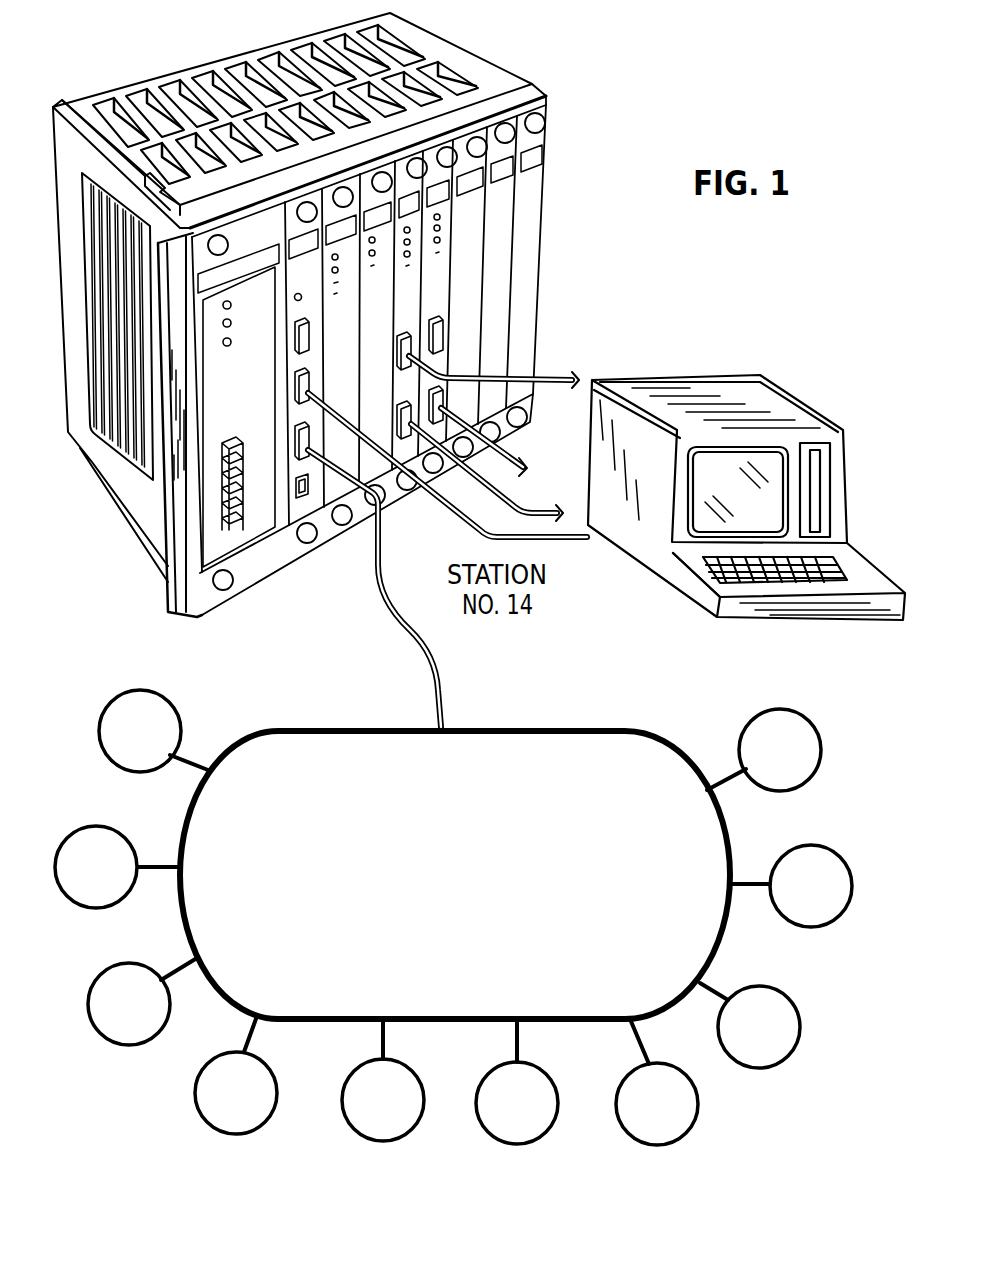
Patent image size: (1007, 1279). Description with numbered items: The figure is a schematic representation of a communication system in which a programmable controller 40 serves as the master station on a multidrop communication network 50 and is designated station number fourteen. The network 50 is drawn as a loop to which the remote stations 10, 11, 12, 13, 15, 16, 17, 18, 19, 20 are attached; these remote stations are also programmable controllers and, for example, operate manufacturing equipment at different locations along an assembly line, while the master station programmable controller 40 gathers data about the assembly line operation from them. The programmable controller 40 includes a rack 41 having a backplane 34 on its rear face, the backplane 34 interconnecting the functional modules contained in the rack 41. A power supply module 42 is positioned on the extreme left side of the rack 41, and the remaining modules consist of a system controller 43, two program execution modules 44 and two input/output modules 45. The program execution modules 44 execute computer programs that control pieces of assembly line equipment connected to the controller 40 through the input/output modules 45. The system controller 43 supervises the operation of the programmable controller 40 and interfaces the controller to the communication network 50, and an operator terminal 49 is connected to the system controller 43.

The backplane 34 is at (250, 52).
The rack 41 is at (443, 48).
The programmable controller 40 is at (520, 260).
The power supply module 42 is at (243, 580).
The system controller 43 is at (303, 553).
The program execution module 44 is at (360, 520).
The input/output module 45 is at (406, 499).
The operator terminal 49 is at (752, 390).
The multidrop communication network 50 is at (372, 728).
The remote station 10 is at (764, 750).
The remote station 11 is at (790, 886).
The remote station 12 is at (750, 1025).
The remote station 13 is at (657, 1082).
The remote station 15 is at (517, 1081).
The remote station 16 is at (383, 1080).
The remote station 17 is at (236, 1075).
The remote station 18 is at (142, 1001).
The remote station 19 is at (117, 867).
The remote station 20 is at (153, 731).